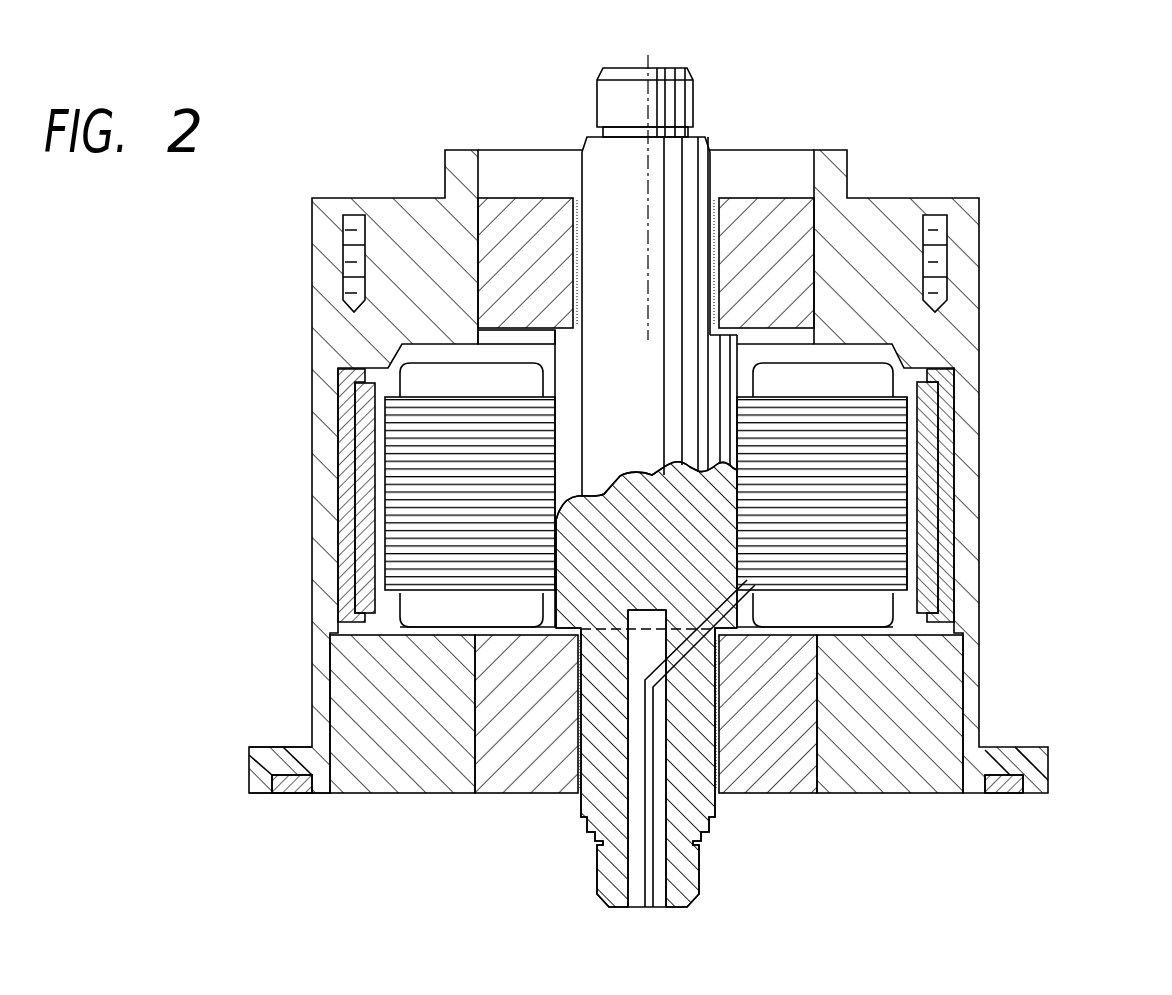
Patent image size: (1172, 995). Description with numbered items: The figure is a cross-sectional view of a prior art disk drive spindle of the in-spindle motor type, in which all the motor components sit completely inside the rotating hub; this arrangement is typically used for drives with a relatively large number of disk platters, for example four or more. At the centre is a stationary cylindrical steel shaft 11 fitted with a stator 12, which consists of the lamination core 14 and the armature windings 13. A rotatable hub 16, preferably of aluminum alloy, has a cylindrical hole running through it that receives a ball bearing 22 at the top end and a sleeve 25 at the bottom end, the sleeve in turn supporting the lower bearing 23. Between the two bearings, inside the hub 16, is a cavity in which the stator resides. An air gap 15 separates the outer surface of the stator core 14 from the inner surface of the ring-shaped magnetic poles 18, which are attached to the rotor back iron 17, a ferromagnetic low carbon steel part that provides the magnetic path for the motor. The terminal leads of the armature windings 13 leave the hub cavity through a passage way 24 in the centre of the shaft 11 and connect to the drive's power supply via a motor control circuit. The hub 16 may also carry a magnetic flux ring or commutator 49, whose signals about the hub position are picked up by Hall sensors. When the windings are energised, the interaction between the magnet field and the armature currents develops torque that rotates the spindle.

The cylindrical steel shaft 11 is at (590, 150).
The stator 12 is at (843, 385).
The armature windings 13 is at (887, 372).
The lamination core 14 is at (443, 555).
The air gap 15 is at (907, 568).
The rotatable hub 16 is at (968, 234).
The rotor back iron 17 is at (942, 437).
The ring-shaped magnetic poles 18 is at (920, 553).
The ball bearing 22 is at (752, 223).
The bearing 23 is at (517, 772).
The passage way 24 is at (633, 827).
The sleeve 25 is at (420, 757).
The commutator 49 is at (283, 793).